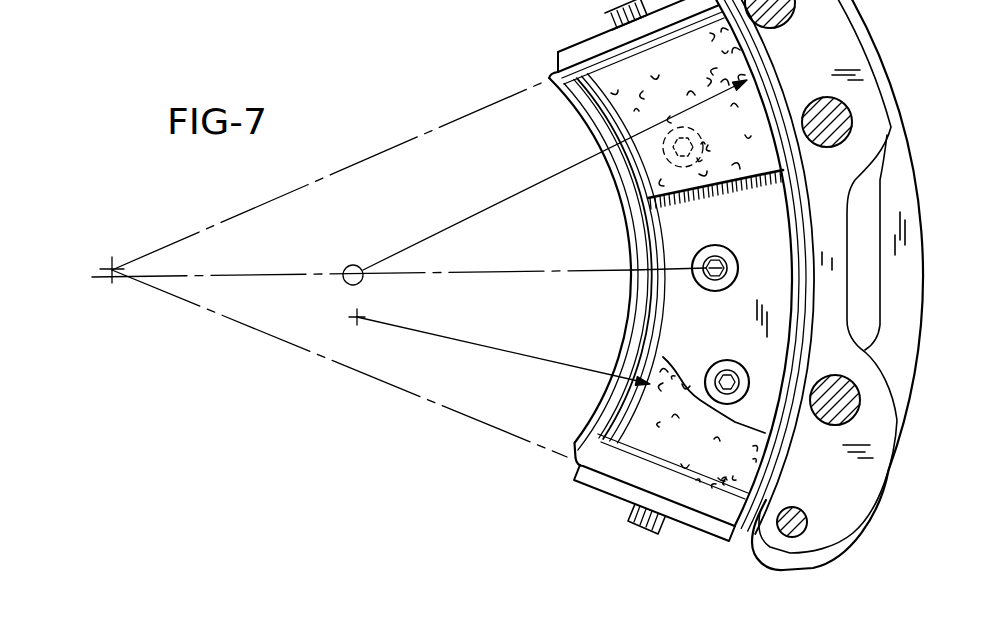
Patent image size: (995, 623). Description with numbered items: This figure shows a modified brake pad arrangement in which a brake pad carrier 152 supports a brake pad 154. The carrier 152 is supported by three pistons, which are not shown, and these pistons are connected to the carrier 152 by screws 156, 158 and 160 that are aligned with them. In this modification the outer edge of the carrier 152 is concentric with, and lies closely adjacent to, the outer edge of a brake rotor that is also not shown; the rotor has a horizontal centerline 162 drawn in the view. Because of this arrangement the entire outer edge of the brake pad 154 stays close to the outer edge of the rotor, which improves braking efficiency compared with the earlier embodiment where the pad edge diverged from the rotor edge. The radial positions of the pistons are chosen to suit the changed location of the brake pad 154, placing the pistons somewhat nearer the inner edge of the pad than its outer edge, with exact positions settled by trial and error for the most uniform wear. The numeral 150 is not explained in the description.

The mounting assembly 150 is at (602, 285).
The brake pad carrier 152 is at (590, 126).
The brake pad 154 is at (612, 62).
The screw 156 is at (626, 180).
The screw 158 is at (700, 252).
The screw 160 is at (706, 373).
The horizontal centerline 162 is at (318, 272).